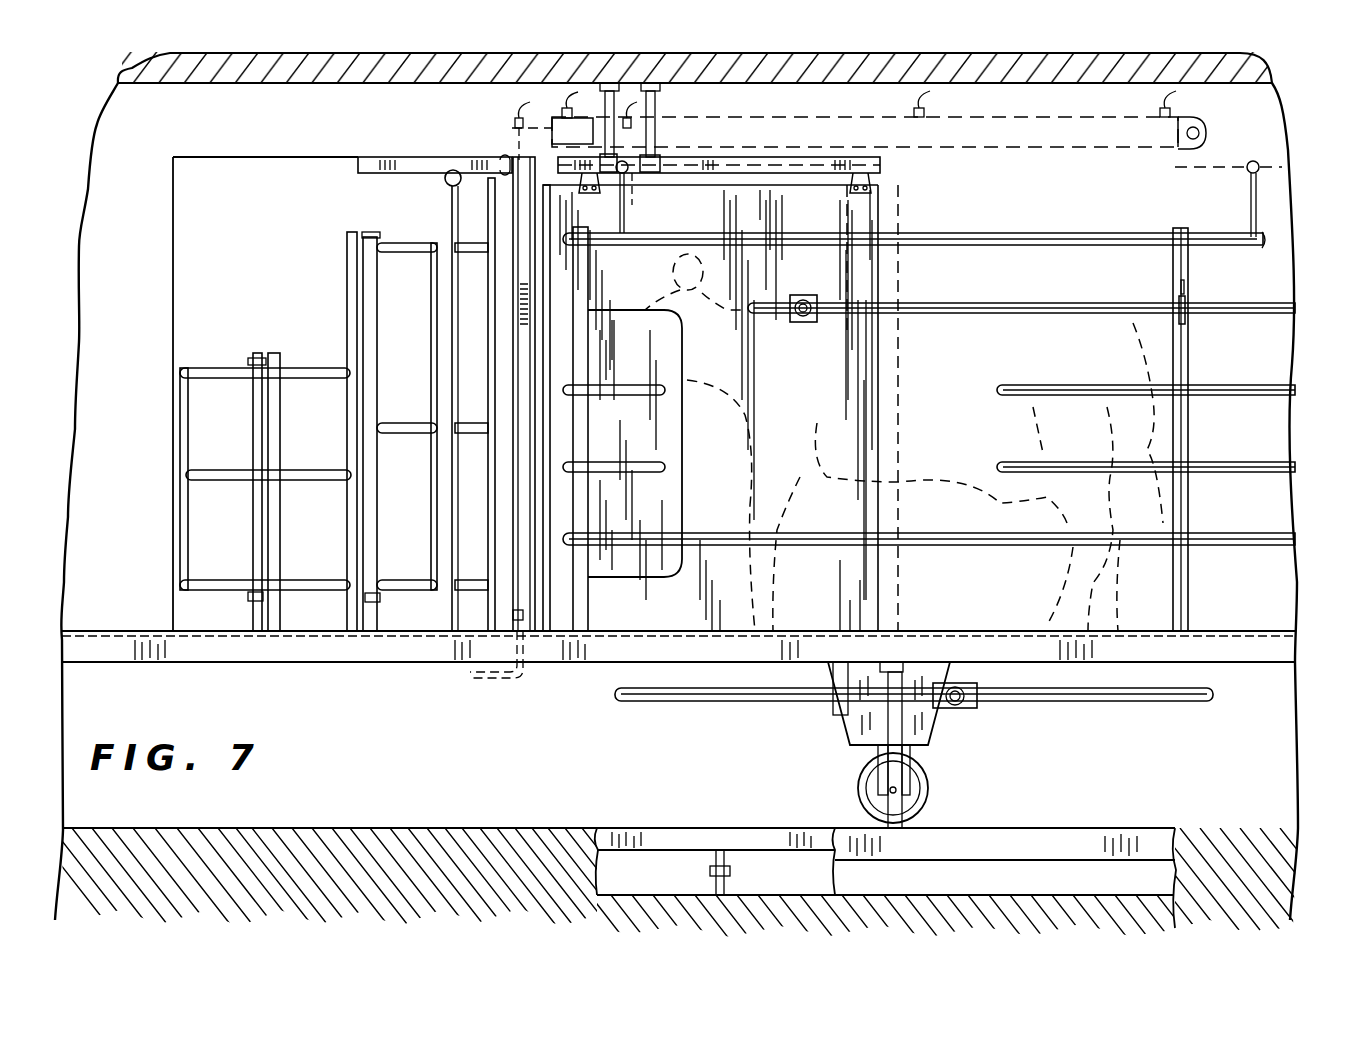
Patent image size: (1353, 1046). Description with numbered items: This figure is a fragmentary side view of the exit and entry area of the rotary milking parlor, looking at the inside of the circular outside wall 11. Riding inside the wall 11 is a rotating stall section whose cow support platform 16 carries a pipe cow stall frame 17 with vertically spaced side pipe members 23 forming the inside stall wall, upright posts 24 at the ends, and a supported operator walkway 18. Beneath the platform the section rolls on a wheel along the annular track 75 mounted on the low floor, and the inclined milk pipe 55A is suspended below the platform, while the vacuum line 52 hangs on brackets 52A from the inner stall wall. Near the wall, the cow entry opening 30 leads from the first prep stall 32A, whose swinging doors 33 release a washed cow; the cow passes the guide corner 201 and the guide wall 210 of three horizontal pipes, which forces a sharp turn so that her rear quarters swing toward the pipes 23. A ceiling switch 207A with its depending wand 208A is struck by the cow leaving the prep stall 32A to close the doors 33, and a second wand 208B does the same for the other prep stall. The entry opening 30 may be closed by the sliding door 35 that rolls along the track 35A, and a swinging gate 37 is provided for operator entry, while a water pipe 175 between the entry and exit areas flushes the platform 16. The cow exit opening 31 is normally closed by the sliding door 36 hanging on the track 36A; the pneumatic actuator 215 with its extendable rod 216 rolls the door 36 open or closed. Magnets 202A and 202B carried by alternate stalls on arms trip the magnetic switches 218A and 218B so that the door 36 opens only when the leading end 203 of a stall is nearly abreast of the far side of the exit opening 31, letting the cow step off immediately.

The outside wall 11 is at (108, 157).
The cow support platform 16 is at (969, 631).
The cow stall frame 17 is at (1141, 552).
The operator walkway 18 is at (1122, 828).
The side pipe members 23 is at (1022, 394).
The upright posts 24 is at (1211, 429).
The cow entry opening 30 is at (411, 192).
The cow exit opening 31 is at (868, 222).
The prep stall 32A is at (393, 408).
The swinging doors 33 is at (410, 252).
The sliding door 35 is at (470, 628).
The track 35A is at (355, 166).
The sliding door 36 is at (858, 418).
The track 36A is at (747, 162).
The swinging gate 37 is at (236, 368).
The vacuum line 52 is at (1120, 307).
The brackets 52A is at (1190, 312).
The pipe 55A is at (1170, 708).
The annular track 75 is at (686, 834).
The pipe 175 is at (533, 633).
The guide corner 201 is at (355, 478).
The magnet 202A is at (628, 172).
The magnet 202B is at (1259, 165).
The leading end of stall 203 is at (592, 555).
The switch 207A is at (456, 172).
The wand 208A is at (455, 330).
The wand 208B is at (847, 286).
The guide wall 210 is at (352, 568).
The pneumatic actuator 215 is at (1055, 149).
The extendable rod 216 is at (774, 118).
The magnetic switch 218A is at (607, 156).
The magnetic switch 218B is at (660, 157).